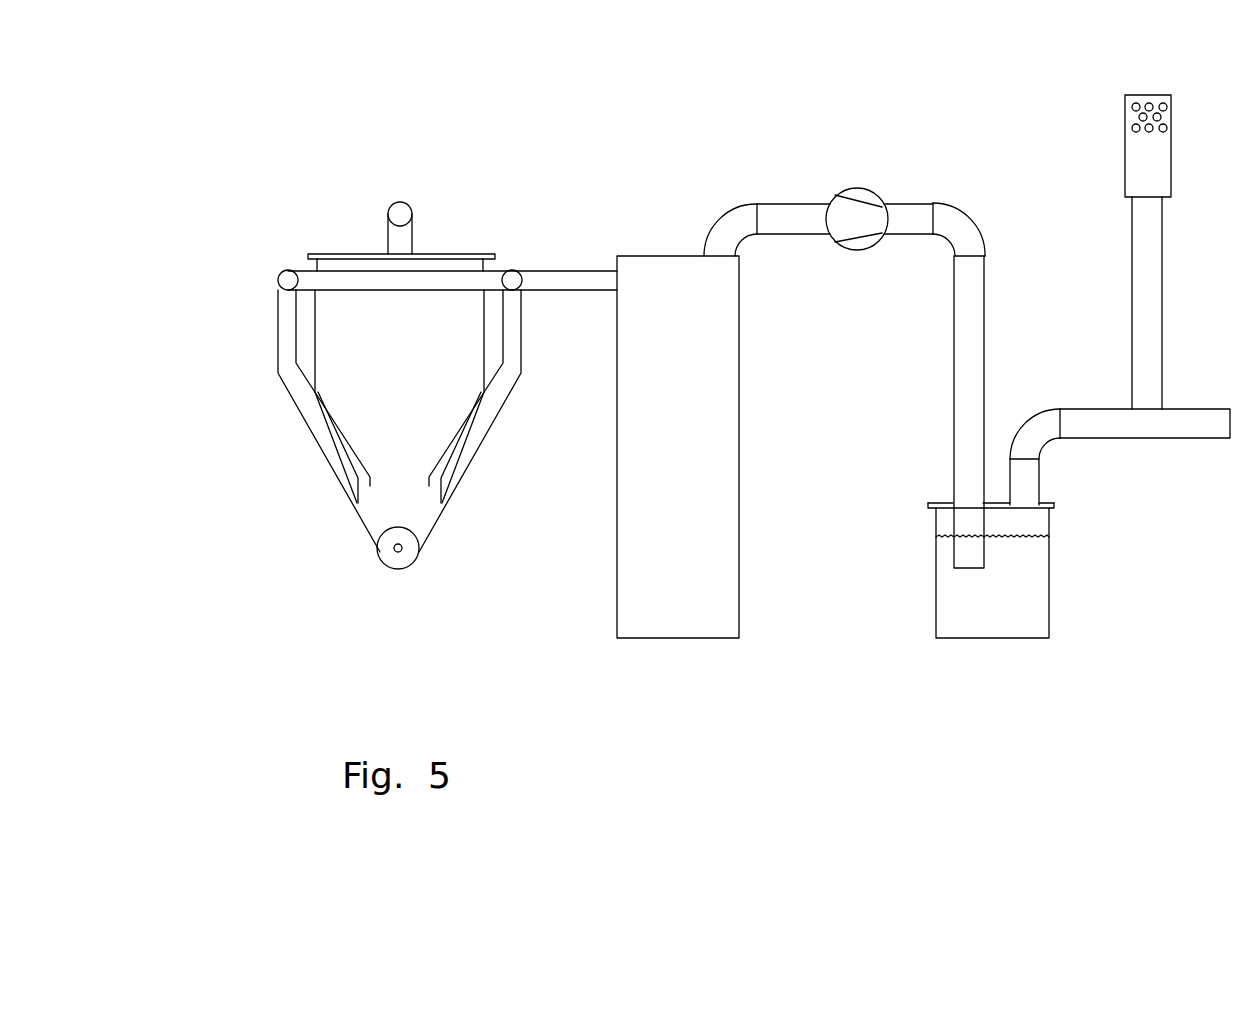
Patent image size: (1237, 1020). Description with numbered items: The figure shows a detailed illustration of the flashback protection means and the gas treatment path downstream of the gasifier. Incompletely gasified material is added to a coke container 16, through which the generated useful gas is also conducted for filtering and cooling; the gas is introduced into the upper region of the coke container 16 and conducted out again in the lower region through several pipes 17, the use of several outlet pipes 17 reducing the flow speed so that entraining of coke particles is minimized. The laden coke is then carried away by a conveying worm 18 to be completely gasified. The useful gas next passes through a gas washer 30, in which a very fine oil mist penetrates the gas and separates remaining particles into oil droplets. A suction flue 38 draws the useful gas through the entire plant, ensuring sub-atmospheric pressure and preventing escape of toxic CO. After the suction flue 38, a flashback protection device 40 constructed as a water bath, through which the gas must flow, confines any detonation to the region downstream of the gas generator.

The coke container 16 is at (375, 437).
The outlet pipes 17 is at (295, 384).
The conveying worm 18 is at (392, 563).
The gas washer 30 is at (647, 557).
The suction flue 38 is at (846, 215).
The flashback protection device 40 is at (1037, 576).